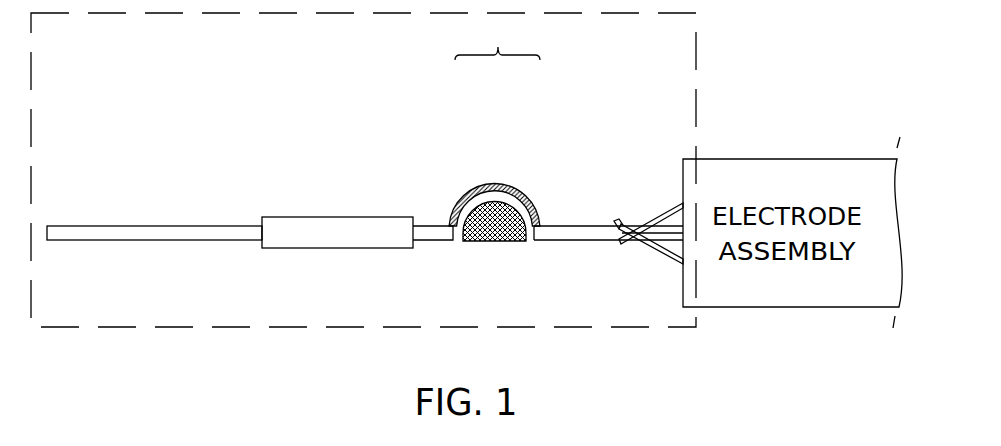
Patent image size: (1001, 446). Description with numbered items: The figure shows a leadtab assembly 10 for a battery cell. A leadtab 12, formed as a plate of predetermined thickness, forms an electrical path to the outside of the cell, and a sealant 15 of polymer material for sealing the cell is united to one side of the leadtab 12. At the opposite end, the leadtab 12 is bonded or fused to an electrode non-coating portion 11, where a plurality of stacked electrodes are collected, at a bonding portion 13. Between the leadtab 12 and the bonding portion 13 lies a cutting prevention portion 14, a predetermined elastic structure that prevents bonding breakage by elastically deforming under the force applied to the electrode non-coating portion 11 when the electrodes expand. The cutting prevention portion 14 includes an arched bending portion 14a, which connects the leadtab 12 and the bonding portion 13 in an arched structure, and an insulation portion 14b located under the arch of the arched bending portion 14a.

The leadtab assembly 10 is at (696, 33).
The electrode non-coating portion 11 is at (666, 206).
The leadtab 12 is at (125, 226).
The bonding portion 13 is at (570, 226).
The cutting prevention portion 14 is at (497, 39).
The arched bending portion 14a is at (452, 195).
The insulation portion 14b is at (500, 221).
The sealant 15 is at (299, 226).